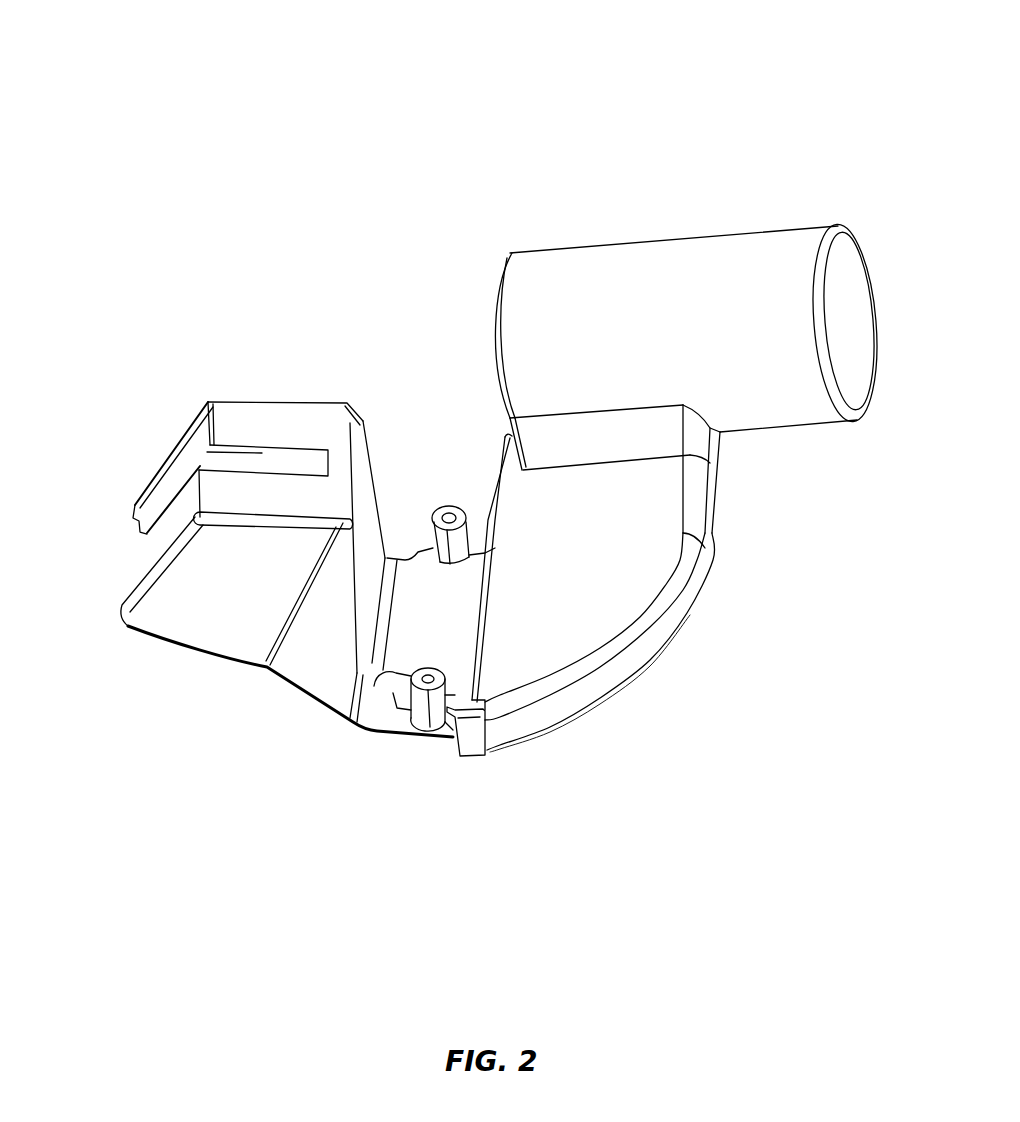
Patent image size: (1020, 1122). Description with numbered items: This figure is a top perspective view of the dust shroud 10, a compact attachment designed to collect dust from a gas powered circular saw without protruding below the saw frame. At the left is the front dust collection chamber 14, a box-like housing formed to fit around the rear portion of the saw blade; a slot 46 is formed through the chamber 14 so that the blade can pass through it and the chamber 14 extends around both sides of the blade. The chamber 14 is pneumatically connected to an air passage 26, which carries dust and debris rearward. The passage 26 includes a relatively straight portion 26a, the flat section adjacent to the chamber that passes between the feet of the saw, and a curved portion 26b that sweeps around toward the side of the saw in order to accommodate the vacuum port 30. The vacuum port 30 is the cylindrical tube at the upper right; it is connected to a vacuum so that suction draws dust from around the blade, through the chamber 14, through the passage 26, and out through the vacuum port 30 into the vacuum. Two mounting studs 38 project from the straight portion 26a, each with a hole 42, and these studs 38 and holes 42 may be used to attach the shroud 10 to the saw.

The dust shroud 10 is at (624, 138).
The dust collection chamber 14 is at (238, 625).
The air passage 26 is at (554, 725).
The straight portion 26a is at (377, 690).
The curved portion 26b is at (627, 557).
The vacuum port 30 is at (728, 272).
The mounting studs 38 is at (440, 507).
The holes 42 is at (448, 508).
The slot 46 is at (228, 460).